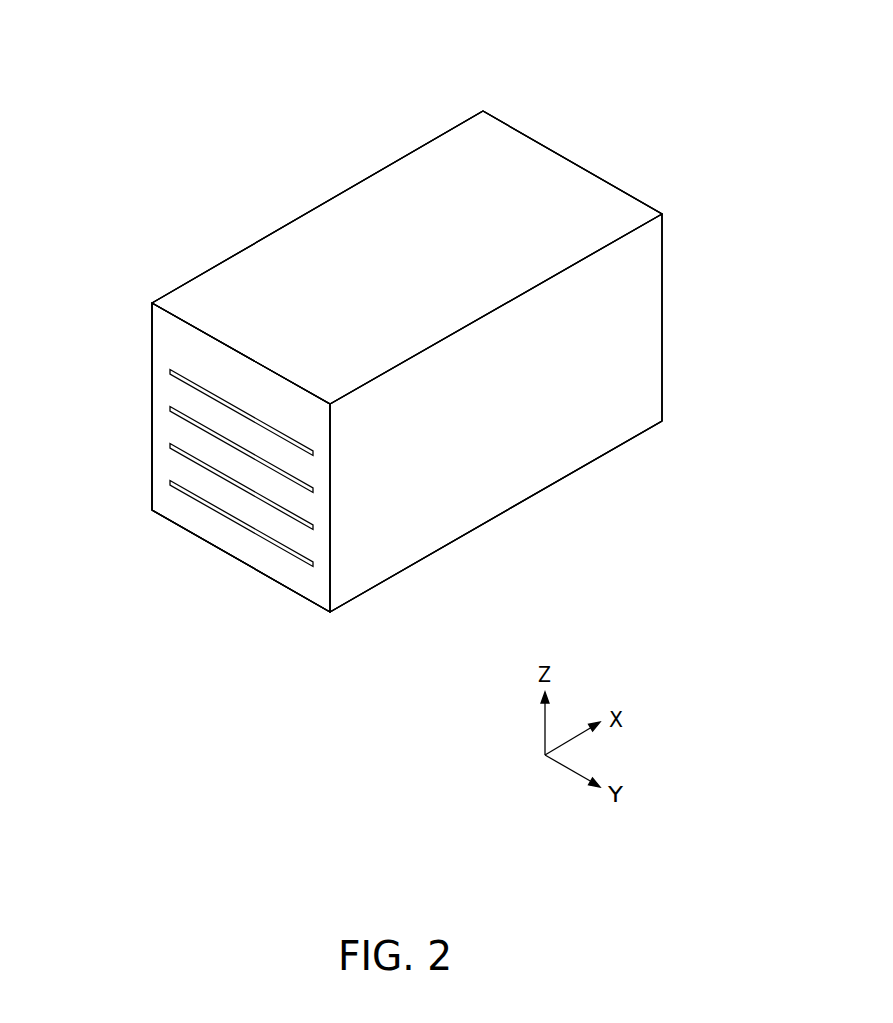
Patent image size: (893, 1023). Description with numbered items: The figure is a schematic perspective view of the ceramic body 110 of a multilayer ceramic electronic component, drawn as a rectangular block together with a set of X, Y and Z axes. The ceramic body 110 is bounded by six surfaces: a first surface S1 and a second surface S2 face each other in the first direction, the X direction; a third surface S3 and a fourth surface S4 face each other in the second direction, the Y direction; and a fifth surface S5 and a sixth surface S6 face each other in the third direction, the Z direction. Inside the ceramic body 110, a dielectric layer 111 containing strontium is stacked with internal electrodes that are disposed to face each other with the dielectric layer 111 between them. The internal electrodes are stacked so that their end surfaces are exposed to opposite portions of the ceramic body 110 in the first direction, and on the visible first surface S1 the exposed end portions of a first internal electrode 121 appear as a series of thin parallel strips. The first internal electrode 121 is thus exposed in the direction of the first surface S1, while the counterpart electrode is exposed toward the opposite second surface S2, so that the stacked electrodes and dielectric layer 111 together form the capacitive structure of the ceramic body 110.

The ceramic body 110 is at (165, 25).
The dielectric layer 111 is at (158, 443).
The first internal electrode 121 is at (186, 380).
The first surface S1 is at (224, 481).
The second surface S2 is at (580, 203).
The third surface S3 is at (630, 348).
The fourth surface S4 is at (260, 274).
The fifth surface S5 is at (407, 187).
The sixth surface S6 is at (464, 498).